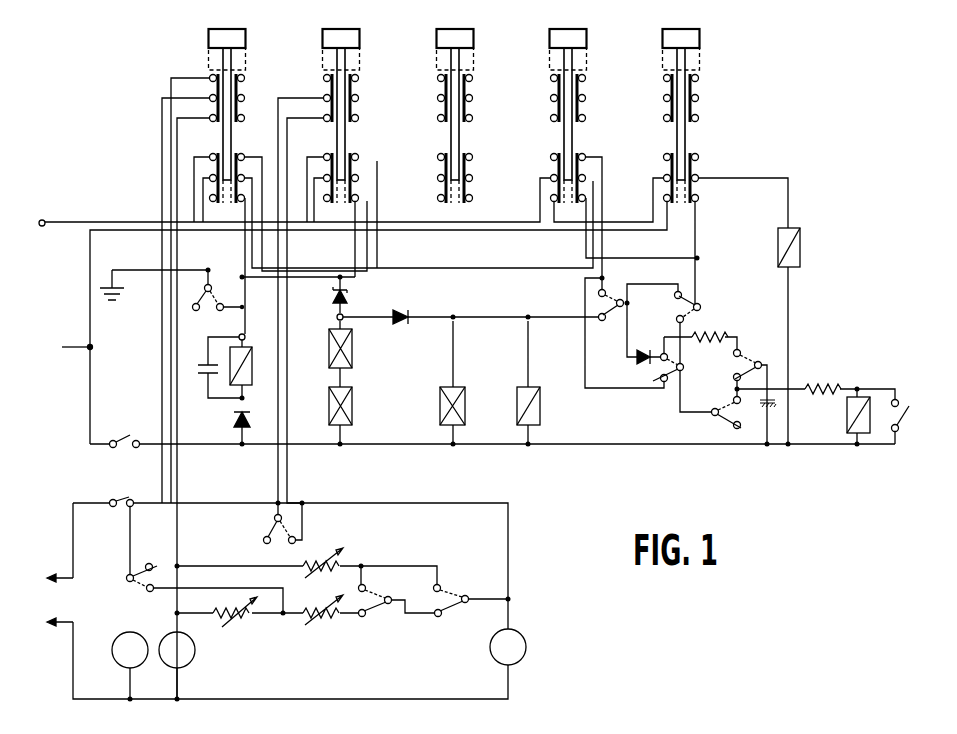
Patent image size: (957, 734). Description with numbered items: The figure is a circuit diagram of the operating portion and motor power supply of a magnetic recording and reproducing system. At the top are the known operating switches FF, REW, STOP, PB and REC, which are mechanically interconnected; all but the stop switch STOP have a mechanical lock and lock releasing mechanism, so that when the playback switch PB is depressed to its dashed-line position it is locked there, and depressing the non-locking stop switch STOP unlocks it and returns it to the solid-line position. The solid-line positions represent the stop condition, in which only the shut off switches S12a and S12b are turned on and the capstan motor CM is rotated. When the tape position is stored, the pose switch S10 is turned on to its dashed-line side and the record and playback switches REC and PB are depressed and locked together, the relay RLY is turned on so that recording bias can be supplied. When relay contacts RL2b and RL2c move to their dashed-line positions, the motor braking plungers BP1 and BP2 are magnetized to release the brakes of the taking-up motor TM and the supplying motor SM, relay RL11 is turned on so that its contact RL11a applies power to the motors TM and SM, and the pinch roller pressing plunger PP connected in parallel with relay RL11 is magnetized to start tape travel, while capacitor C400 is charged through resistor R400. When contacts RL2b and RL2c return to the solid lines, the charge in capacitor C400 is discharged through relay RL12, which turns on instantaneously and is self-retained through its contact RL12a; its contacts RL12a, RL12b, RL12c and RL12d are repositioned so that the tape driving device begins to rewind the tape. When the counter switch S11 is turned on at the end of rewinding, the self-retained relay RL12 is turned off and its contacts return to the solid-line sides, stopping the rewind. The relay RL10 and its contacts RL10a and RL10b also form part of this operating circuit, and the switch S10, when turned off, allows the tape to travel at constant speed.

The fast forward operating switch FF is at (227, 105).
The rewind operating switch REW is at (341, 105).
The stop switch STOP is at (453, 105).
The playback operating switch PB is at (568, 105).
The record operating switch REC is at (681, 105).
The relay contact RL12d is at (197, 300).
The relay RL10 is at (233, 387).
The shut off switch S12a is at (135, 421).
The motor braking plunger BP1 is at (352, 351).
The motor braking plunger BP2 is at (352, 409).
The pinch roller pressing plunger PP is at (466, 393).
The relay RL11 is at (540, 409).
The relay contact RL10a is at (592, 290).
The pose switch S10 is at (693, 297).
The resistor R400 is at (706, 353).
The relay contact RL2c is at (668, 383).
The relay contact RL2b is at (749, 352).
The relay contact RL12a is at (736, 427).
The capacitor C400 is at (776, 400).
The relay RL12 is at (847, 417).
The counter switch S11 is at (905, 413).
The relay RLY is at (800, 250).
The shut off switch S12b is at (129, 497).
The relay contact RL11a is at (134, 566).
The relay contact RL12b is at (268, 537).
The relay contact RL10b is at (366, 618).
The relay contact RL12c is at (444, 585).
The capstan motor CM is at (130, 650).
The taking-up side motor TM is at (177, 665).
The supplying side motor SM is at (508, 647).